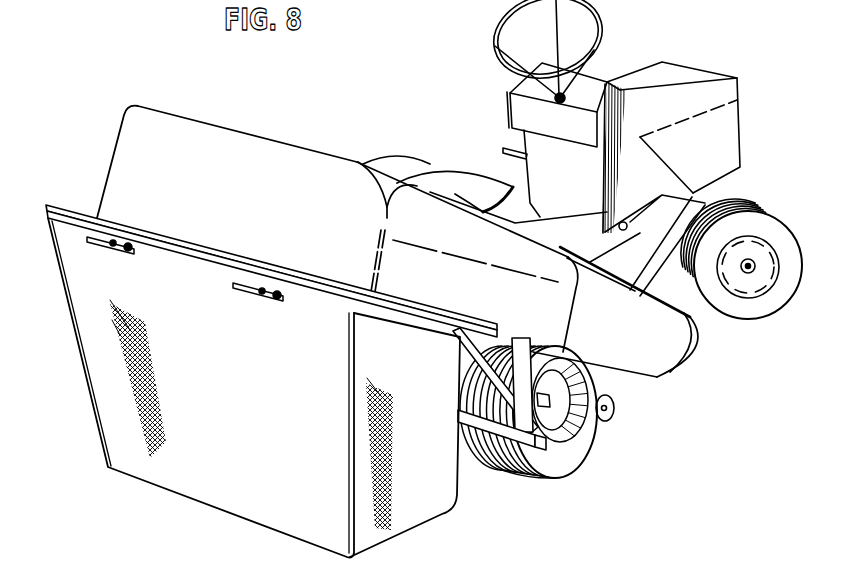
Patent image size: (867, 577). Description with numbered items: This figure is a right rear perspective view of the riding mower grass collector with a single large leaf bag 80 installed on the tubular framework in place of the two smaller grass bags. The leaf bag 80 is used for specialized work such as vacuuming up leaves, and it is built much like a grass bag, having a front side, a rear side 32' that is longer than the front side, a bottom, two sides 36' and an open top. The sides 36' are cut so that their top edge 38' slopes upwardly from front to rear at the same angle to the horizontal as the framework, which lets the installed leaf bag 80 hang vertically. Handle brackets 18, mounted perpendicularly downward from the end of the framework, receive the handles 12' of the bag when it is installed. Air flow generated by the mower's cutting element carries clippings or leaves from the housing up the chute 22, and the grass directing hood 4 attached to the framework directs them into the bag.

The grass directing hood 4 is at (251, 136).
The handles 12' is at (176, 285).
The handle brackets 18 is at (133, 252).
The chute 22 is at (690, 314).
The rear side 32' is at (199, 388).
The sides 36' is at (405, 435).
The top edge 38' is at (465, 384).
The leaf bag 80 is at (489, 497).